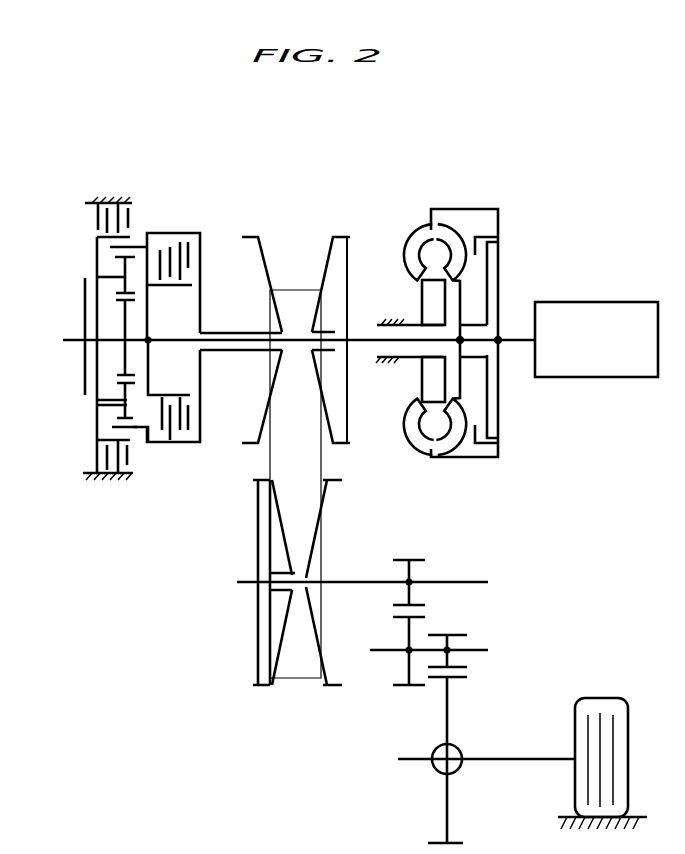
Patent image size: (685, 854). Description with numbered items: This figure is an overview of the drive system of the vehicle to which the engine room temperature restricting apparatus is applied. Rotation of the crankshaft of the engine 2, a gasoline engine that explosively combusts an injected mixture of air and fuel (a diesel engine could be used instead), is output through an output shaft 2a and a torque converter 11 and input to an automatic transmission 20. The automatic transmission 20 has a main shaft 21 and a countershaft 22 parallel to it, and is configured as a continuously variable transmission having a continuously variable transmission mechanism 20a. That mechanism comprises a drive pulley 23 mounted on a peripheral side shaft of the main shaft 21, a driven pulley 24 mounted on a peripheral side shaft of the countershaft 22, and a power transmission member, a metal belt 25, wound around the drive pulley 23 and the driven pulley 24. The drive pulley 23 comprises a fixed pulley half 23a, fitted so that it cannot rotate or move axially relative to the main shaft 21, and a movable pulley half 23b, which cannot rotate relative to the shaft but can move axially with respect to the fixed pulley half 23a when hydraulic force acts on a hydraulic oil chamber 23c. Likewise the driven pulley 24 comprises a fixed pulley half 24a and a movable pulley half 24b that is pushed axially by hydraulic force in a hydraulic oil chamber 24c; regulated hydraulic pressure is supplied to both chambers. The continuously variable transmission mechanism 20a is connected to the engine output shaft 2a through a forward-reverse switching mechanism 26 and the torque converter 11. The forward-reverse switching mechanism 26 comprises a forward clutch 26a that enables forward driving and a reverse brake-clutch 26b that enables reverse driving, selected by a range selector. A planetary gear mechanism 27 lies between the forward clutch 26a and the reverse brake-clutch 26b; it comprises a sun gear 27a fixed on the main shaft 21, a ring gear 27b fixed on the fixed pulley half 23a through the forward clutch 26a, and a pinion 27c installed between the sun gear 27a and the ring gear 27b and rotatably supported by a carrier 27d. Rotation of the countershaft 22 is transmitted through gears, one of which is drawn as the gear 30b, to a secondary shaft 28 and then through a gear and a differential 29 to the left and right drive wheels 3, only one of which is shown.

The engine 2 is at (613, 378).
The output shaft 2a is at (513, 343).
The drive wheels 3 is at (628, 725).
The torque converter 11 is at (420, 216).
The automatic transmission 20 is at (372, 132).
The continuously variable transmission mechanism 20a is at (130, 563).
The main shaft 21 is at (362, 343).
The countershaft 22 is at (327, 583).
The drive pulley 23 is at (354, 421).
The fixed pulley half 23a is at (265, 237).
The movable pulley half 23b is at (322, 280).
The hydraulic oil chamber 23c is at (335, 275).
The driven pulley 24 is at (252, 553).
The fixed pulley half 24a is at (340, 481).
The movable pulley half 24b is at (297, 486).
The hydraulic oil chamber 24c is at (263, 510).
The metal belt 25 is at (283, 458).
The forward-reverse switching mechanism 26 is at (70, 207).
The forward clutch 26a is at (172, 250).
The reverse brake-clutch 26b is at (105, 203).
The planetary gear mechanism 27 is at (115, 325).
The sun gear 27a is at (123, 360).
The ring gear 27b is at (143, 430).
The pinion 27c is at (103, 408).
The carrier 27d is at (97, 424).
The secondary shaft 28 is at (475, 652).
The differential 29 is at (437, 773).
The gear 30b is at (407, 667).